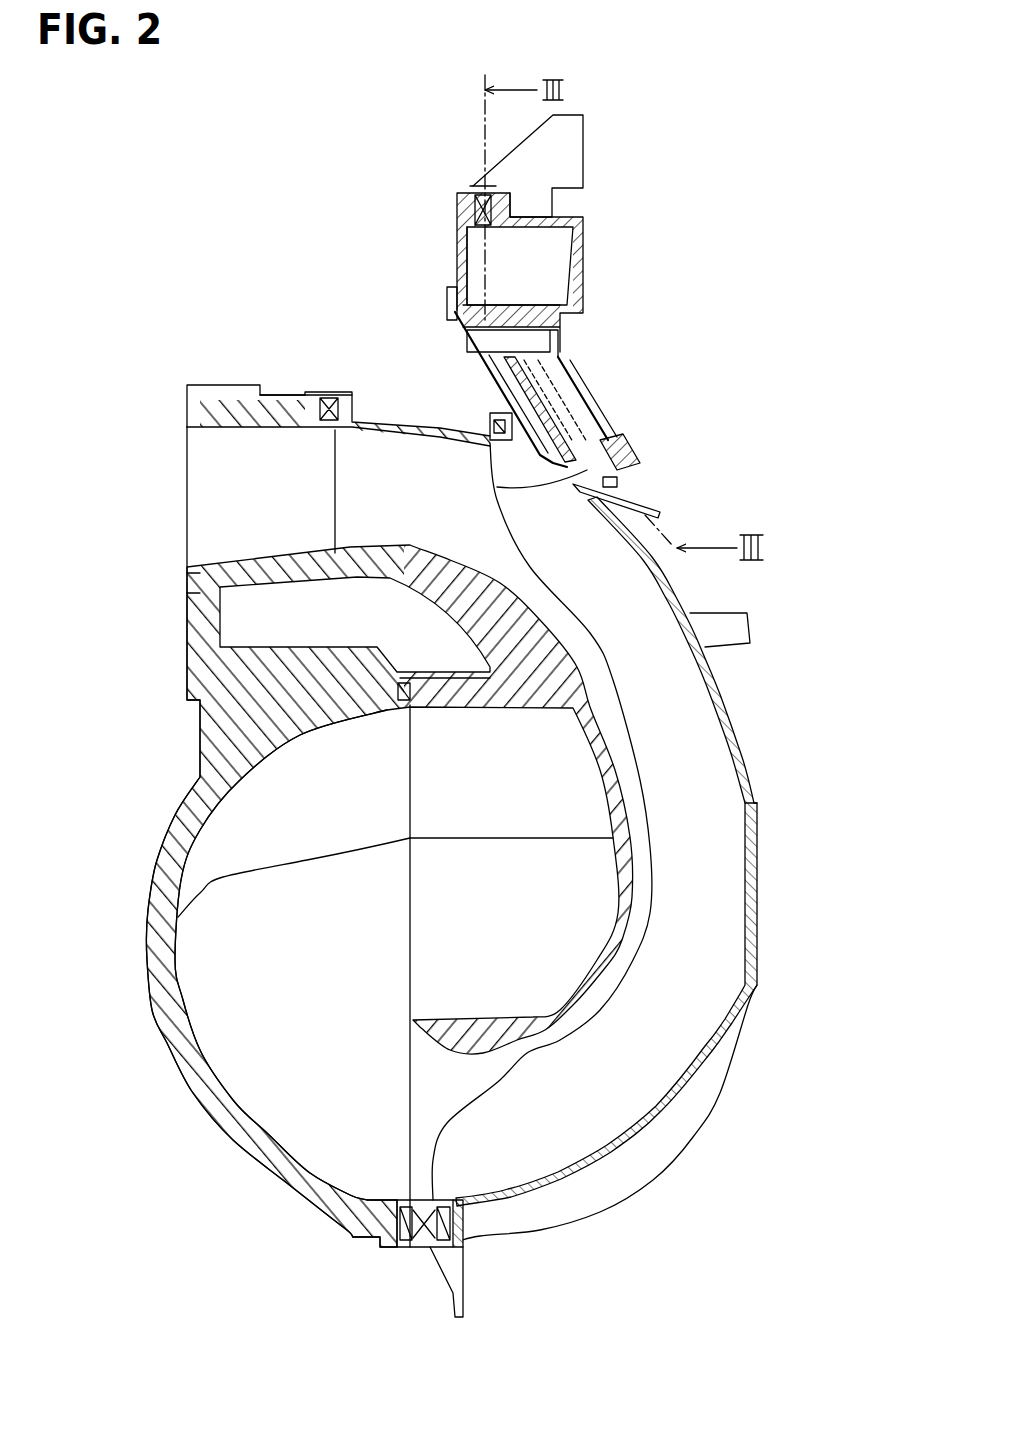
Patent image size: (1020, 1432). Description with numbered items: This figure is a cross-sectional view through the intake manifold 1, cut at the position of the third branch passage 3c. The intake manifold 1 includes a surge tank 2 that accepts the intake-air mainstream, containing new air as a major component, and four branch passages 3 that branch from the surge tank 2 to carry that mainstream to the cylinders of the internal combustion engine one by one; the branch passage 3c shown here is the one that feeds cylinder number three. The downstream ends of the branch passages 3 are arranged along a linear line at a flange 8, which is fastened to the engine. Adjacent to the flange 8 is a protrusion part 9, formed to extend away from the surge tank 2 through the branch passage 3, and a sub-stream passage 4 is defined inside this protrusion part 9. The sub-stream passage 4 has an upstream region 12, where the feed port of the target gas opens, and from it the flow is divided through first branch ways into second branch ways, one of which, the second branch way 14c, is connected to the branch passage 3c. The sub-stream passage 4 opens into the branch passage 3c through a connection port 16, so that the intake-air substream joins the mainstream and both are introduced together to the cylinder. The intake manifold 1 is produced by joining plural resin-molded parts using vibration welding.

The intake manifold 1 is at (178, 257).
The surge tank 2 is at (245, 850).
The branch passage 3 is at (645, 868).
The branch passage 3c is at (705, 745).
The sub-stream passage 4 is at (602, 316).
The flange 8 is at (193, 400).
The protrusion part 9 is at (592, 222).
The upstream region 12 is at (557, 276).
The second branch way 14c is at (587, 470).
The connection port 16 is at (487, 438).